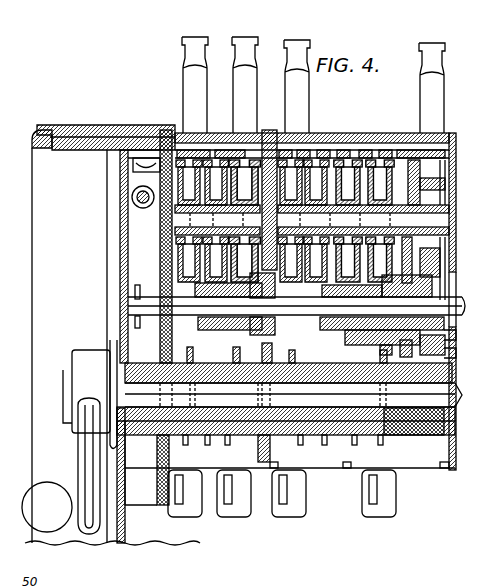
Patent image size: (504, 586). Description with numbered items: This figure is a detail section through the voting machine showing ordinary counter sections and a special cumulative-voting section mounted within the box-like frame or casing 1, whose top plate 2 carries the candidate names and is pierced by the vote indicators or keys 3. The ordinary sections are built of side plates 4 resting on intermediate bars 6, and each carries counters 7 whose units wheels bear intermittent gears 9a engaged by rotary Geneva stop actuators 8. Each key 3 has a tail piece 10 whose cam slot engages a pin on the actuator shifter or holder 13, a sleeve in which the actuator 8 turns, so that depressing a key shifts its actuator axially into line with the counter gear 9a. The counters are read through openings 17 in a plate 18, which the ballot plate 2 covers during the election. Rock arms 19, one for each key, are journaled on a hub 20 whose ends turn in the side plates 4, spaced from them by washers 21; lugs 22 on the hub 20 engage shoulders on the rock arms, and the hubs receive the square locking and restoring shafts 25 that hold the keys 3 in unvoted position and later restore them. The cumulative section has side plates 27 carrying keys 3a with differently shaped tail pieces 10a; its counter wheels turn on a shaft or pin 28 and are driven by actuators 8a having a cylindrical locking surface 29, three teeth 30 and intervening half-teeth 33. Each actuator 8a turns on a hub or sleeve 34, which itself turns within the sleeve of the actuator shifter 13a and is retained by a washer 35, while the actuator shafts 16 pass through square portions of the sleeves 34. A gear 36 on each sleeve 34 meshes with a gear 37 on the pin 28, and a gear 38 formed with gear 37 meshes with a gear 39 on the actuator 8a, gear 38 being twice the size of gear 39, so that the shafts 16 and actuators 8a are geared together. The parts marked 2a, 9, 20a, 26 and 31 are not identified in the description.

The frame or casing 1 is at (120, 265).
The top plate 2 is at (312, 160).
The cup 2a is at (348, 160).
The vote indicators or keys 3 is at (240, 85).
The ballot indicators or keys 3a is at (430, 90).
The side plates 4 is at (157, 458).
The intermediate bars 6 is at (345, 468).
The counters 7 is at (232, 161).
The Geneva stop actuators 8 is at (268, 283).
The Geneva stop actuators 8a is at (377, 328).
The post 9 is at (268, 130).
The intermittent gear 9a is at (378, 160).
The tail pieces 10 is at (233, 510).
The tail pieces 10a is at (362, 508).
The actuator shifters or holders 13 is at (206, 330).
The actuator shifter or support 13a is at (340, 332).
The actuator shafts 16 is at (128, 307).
The openings 17 is at (243, 150).
The plate 18 is at (432, 158).
The rock arms 19 is at (233, 352).
The hub 20 is at (209, 447).
The stud 20a is at (352, 434).
The washers 21 is at (186, 355).
The lugs 22 is at (280, 447).
The locking and restoring shafts 25 is at (135, 385).
The handle 26 is at (83, 460).
The side plates 27 is at (274, 463).
The shaft or pin 28 is at (427, 205).
The cylindrical locking surface 29 is at (396, 275).
The teeth 30 is at (424, 343).
The sleeve 31 is at (385, 334).
The half-teeth 33 is at (402, 341).
The hub or sleeve 34 is at (360, 300).
The washer 35 is at (322, 292).
The gear 36 is at (444, 352).
The gear 37 is at (435, 182).
The gear 38 is at (420, 163).
The gear 39 is at (446, 338).